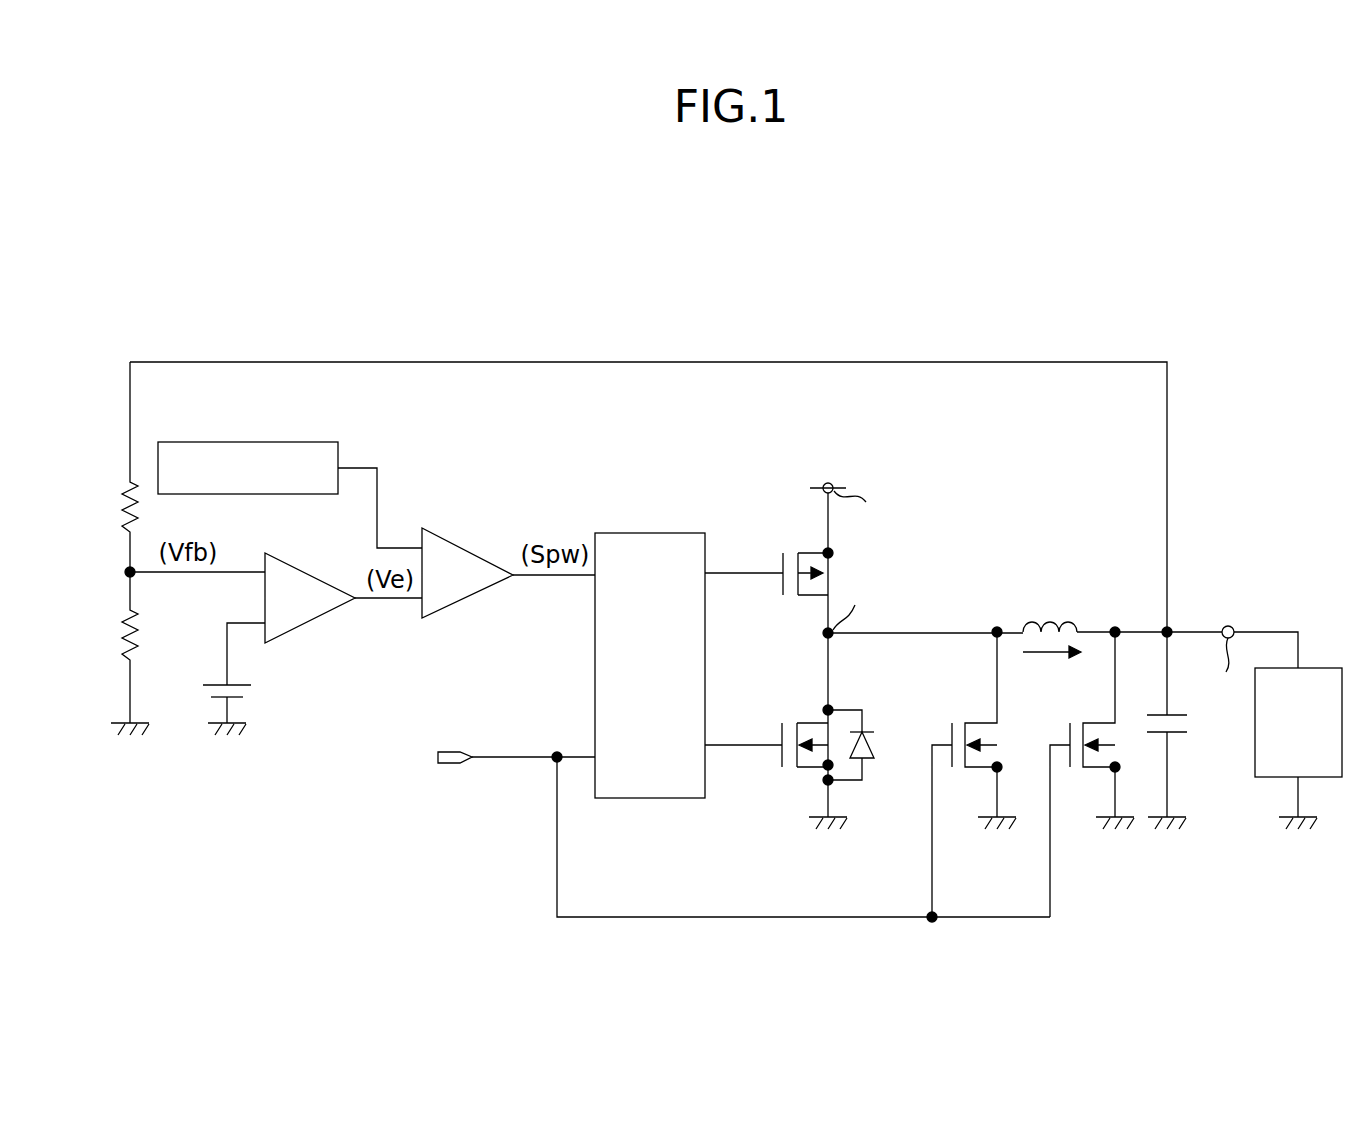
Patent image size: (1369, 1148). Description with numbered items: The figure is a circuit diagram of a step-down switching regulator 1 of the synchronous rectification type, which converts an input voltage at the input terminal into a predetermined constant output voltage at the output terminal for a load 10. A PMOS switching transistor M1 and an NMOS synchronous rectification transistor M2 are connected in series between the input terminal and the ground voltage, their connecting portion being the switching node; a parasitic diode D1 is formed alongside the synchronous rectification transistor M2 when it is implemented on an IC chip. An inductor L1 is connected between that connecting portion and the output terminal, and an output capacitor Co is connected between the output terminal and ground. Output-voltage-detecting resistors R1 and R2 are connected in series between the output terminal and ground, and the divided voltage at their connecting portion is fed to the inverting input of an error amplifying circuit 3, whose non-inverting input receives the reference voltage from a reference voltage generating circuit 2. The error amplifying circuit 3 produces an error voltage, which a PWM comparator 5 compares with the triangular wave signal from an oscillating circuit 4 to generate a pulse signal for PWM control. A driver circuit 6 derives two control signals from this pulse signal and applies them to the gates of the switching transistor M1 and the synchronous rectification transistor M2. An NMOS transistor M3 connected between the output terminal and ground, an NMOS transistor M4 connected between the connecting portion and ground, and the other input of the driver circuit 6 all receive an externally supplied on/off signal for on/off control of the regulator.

The step-down switching regulator 1 is at (757, 338).
The reference voltage generating circuit 2 is at (249, 690).
The error amplifying circuit 3 is at (306, 572).
The oscillating circuit 4 is at (252, 442).
The PWM comparator 5 is at (465, 552).
The driver circuit 6 is at (650, 533).
The load 10 is at (1312, 668).
The resistor for output voltage detection R1 is at (108, 467).
The resistor for output voltage detection R2 is at (114, 651).
The switching transistor M1 is at (805, 559).
The synchronous rectification transistor M2 is at (814, 762).
The NMOS transistor M3 is at (1092, 774).
The NMOS transistor M4 is at (974, 774).
The diode D1 is at (870, 745).
The inductor L1 is at (1052, 633).
The output capacitor Co is at (1186, 730).